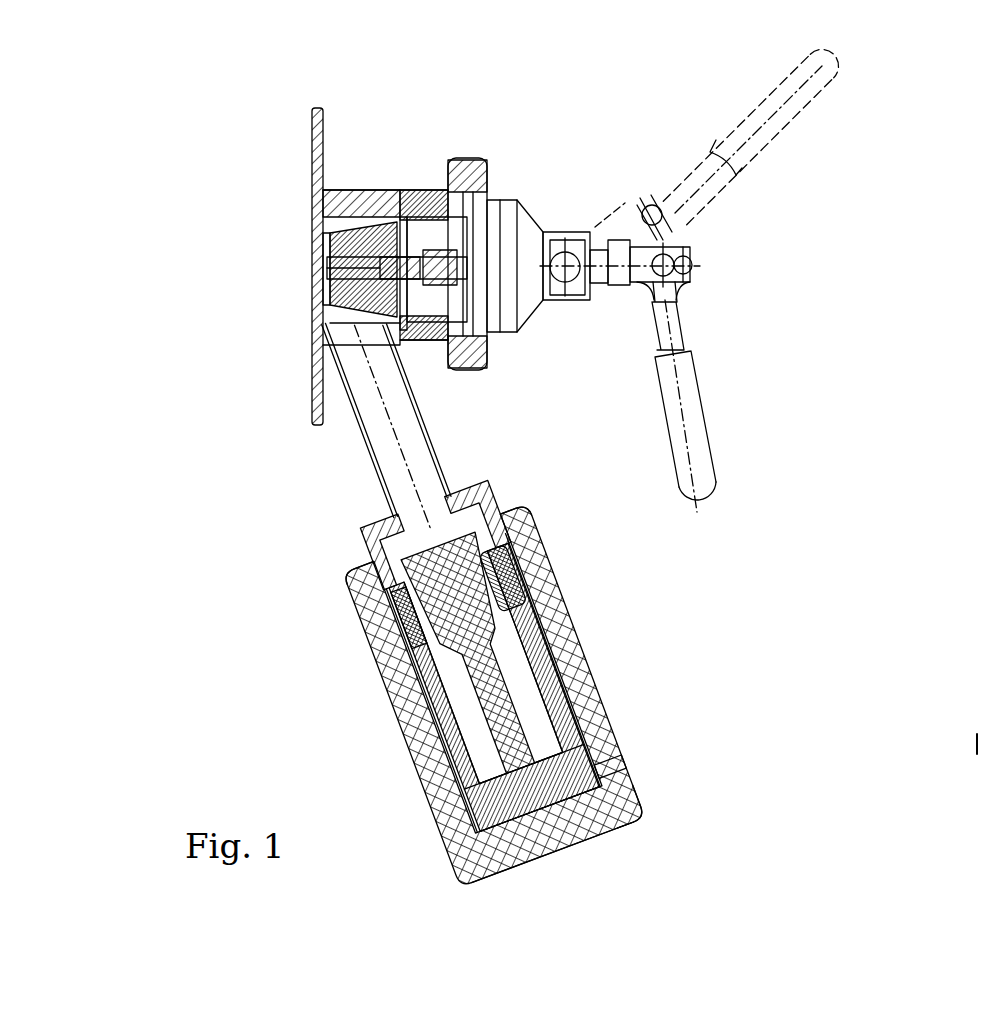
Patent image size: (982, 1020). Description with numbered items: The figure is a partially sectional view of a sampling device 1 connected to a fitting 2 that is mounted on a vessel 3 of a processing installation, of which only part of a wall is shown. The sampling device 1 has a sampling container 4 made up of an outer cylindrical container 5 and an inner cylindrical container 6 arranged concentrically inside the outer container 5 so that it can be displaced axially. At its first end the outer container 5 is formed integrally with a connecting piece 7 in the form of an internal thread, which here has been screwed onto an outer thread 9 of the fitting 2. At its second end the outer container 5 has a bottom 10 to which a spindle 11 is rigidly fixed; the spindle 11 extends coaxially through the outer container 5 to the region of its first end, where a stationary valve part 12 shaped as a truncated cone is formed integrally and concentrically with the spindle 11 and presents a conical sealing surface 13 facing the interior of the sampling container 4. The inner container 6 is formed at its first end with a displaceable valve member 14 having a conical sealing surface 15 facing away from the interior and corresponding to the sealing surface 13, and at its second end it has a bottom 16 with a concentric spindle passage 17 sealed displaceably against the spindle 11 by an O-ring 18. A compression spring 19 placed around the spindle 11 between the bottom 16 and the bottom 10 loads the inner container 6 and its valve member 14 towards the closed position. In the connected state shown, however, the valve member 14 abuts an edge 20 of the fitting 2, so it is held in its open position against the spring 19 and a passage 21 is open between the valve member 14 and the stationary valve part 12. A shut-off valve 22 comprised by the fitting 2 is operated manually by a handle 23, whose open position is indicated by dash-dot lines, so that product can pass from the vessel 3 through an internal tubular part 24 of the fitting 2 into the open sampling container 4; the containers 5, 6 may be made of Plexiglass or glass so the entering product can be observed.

The sampling device 1 is at (607, 602).
The fitting 2 is at (433, 418).
The vessel 3 is at (322, 130).
The sampling container 4 is at (380, 683).
The outer cylindrical container 5 is at (613, 737).
The inner cylindrical container 6 is at (588, 657).
The connecting piece 7 is at (535, 498).
The outer thread 9 is at (345, 582).
The bottom 10 is at (575, 843).
The spindle 11 is at (413, 767).
The stationary valve part 12 is at (436, 555).
The conical sealing surface 13 is at (345, 600).
The displaceable valve member 14 is at (370, 652).
The conical sealing surface 15 is at (552, 573).
The bottom 16 is at (460, 860).
The spindle passage 17 is at (605, 700).
The O-ring 18 is at (613, 770).
The compression spring 19 is at (635, 800).
The edge 20 is at (545, 537).
The passage 21 is at (365, 623).
The shut-off valve 22 is at (533, 173).
The handle 23 is at (783, 120).
The internal tubular part 24 is at (390, 440).